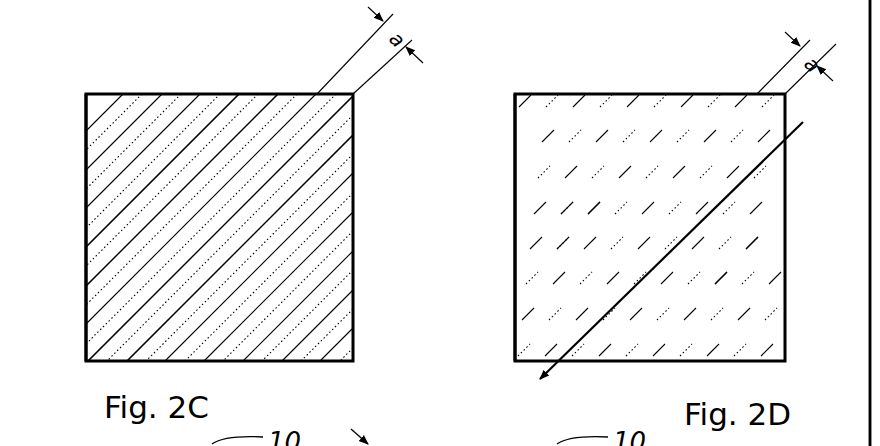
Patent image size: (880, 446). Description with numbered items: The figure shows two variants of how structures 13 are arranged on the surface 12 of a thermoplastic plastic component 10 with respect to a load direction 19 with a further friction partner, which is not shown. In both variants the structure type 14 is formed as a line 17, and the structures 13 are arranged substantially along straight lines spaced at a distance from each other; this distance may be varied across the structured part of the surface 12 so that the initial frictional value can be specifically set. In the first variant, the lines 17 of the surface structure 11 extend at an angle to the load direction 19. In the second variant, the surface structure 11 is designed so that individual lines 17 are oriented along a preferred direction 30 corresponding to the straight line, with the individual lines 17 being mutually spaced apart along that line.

In FIG. 2C, the thermoplastic plastic component 10 is at (157, 70).
In FIG. 2D, the thermoplastic plastic component 10 is at (573, 75).
In FIG. 2C, the surface structure 11 is at (83, 115).
In FIG. 2D, the surface structure 11 is at (512, 133).
In FIG. 2C, the surface 12 is at (176, 170).
In FIG. 2D, the surface 12 is at (586, 166).
In FIG. 2C, the structures 13 is at (284, 163).
In FIG. 2D, the structures 13 is at (574, 226).
In FIG. 2C, the structure type 14 is at (116, 249).
In FIG. 2D, the structure type 14 is at (728, 320).
In FIG. 2C, the lines 17 is at (240, 248).
In FIG. 2D, the lines 17 is at (563, 243).
In FIG. 2D, the load direction 19 is at (879, 178).
In FIG. 2D, the preferred direction 30 is at (803, 122).